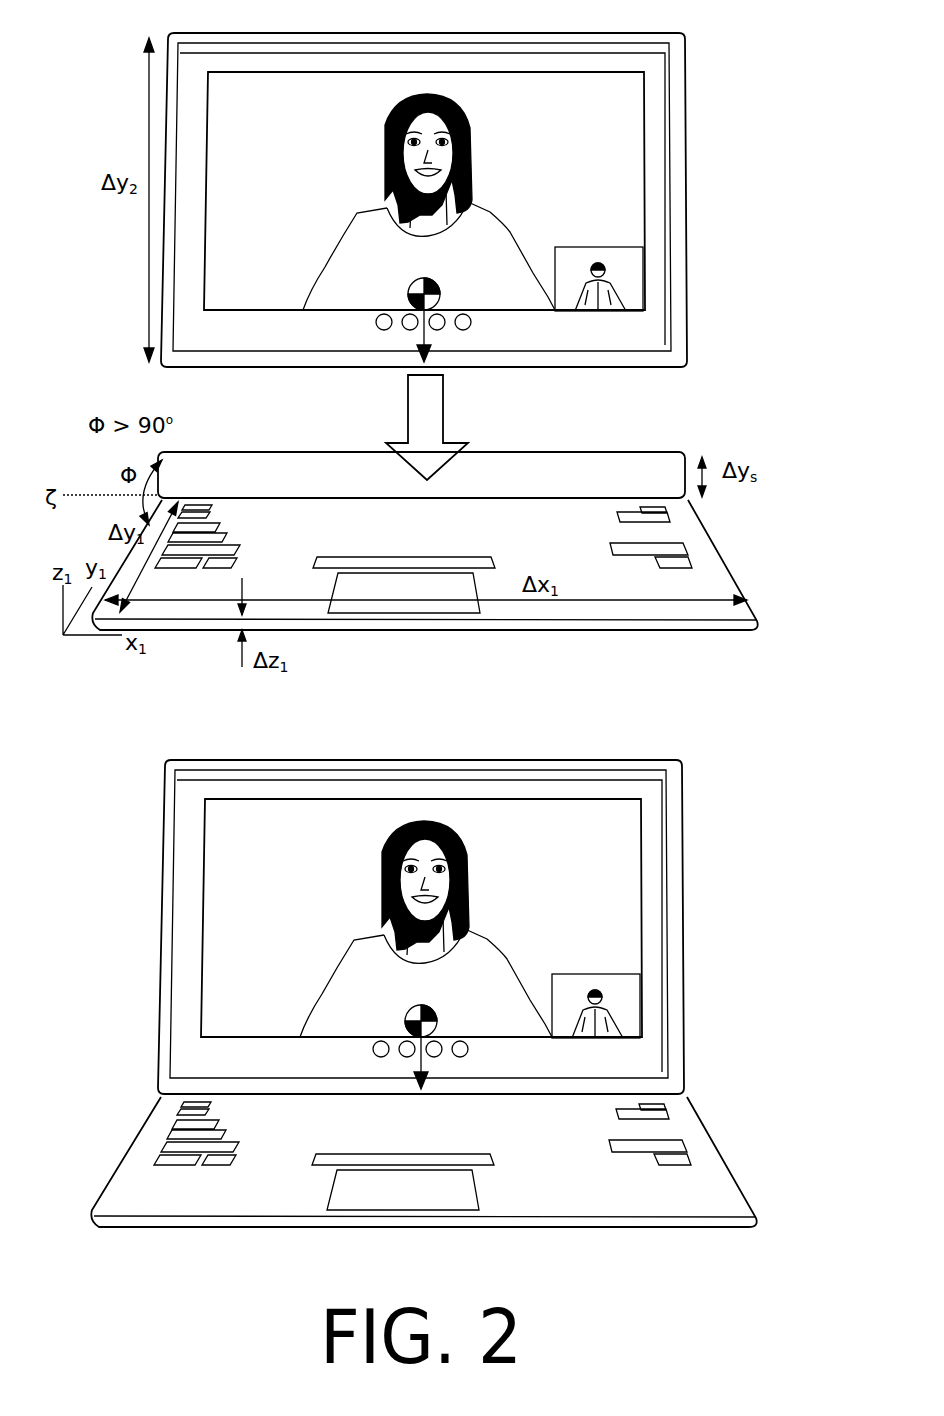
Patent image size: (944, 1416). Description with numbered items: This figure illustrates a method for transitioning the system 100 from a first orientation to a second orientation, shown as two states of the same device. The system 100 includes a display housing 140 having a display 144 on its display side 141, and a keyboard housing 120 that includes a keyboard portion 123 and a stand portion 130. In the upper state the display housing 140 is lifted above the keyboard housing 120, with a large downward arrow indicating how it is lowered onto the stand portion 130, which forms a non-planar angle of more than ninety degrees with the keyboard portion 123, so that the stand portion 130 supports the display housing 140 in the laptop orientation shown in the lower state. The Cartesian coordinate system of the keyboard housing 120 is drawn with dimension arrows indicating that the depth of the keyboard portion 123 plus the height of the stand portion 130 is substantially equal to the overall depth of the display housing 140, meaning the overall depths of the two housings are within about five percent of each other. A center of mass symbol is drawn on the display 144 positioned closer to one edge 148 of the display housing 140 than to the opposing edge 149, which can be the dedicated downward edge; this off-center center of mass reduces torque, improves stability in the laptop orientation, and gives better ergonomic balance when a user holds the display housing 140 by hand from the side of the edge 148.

The system 100 is at (725, 30).
The keyboard housing 120 is at (778, 518).
The keyboard portion 123 is at (720, 575).
The stand portion 130 is at (292, 452).
The display housing 140 is at (687, 135).
The display side 141 is at (249, 346).
The display 144 is at (316, 177).
The edge 148 is at (627, 368).
The opposing edge 149 is at (607, 33).